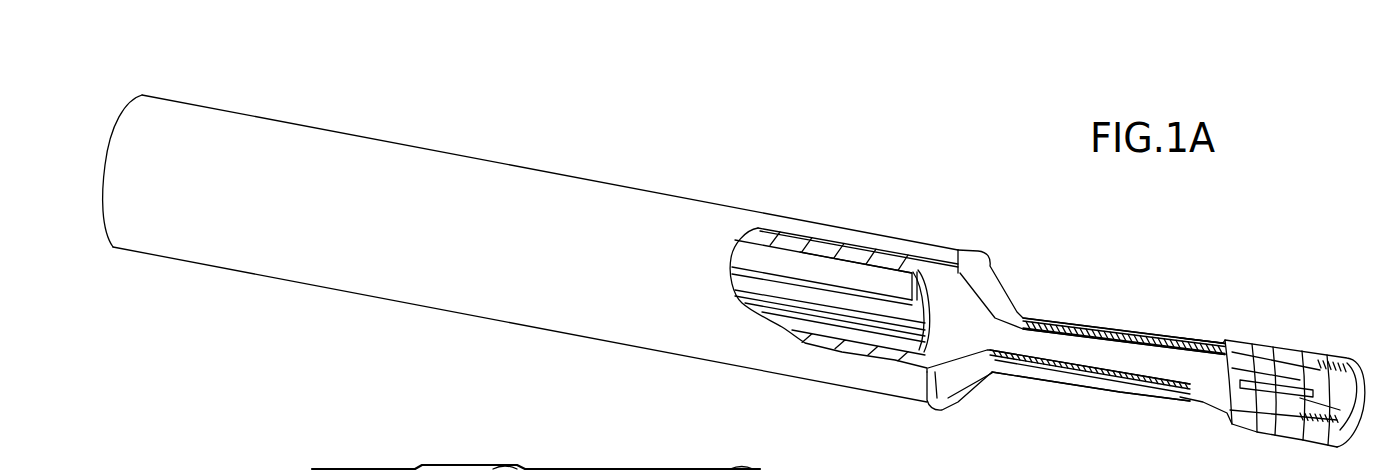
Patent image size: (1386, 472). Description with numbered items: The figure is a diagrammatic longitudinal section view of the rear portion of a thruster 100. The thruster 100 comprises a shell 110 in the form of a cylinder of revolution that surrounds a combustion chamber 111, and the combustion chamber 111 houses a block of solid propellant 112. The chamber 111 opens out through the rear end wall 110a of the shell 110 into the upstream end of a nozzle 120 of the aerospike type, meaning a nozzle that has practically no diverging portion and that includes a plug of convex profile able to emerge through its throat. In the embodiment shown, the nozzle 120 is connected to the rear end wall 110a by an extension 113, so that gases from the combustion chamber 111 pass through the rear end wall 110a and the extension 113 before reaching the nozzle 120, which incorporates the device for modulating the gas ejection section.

The thruster 100 is at (707, 190).
The shell 110 is at (343, 278).
The rear end wall 110a is at (950, 395).
The combustion chamber 111 is at (829, 298).
The block of solid propellant 112 is at (853, 257).
The extension 113 is at (1107, 320).
The nozzle 120 is at (1322, 345).